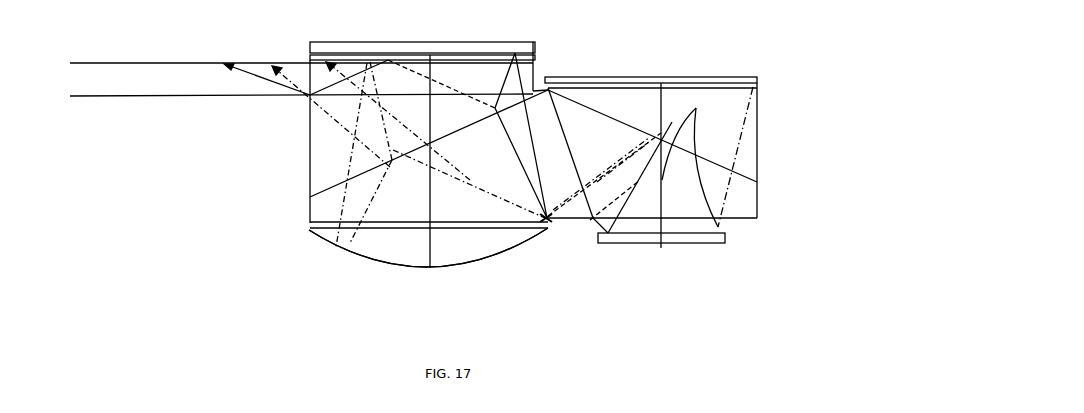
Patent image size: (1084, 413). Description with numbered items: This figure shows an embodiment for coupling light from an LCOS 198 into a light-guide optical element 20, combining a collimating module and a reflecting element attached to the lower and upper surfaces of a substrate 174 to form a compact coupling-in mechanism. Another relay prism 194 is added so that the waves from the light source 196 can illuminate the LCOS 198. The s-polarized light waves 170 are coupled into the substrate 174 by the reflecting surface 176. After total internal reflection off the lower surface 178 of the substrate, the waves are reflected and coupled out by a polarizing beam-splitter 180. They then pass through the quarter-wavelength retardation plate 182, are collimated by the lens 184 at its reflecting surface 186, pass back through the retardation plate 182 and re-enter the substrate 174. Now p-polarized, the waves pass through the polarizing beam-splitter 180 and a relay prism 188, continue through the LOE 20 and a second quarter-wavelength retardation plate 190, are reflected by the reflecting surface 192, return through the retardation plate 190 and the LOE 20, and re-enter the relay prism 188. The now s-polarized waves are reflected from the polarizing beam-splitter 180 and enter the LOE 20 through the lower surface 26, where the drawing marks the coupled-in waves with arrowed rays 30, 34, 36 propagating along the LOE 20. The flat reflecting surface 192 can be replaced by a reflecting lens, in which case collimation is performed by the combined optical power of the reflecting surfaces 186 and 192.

The light-guide optical element 20 is at (101, 83).
The lower surface 26 is at (167, 97).
The light ray 30 is at (324, 55).
The light ray 34 is at (214, 62).
The light ray 36 is at (277, 63).
The s-polarized light waves 170 is at (697, 109).
The substrate 174 is at (757, 187).
The reflecting surface 176 is at (619, 120).
The lower surface 178 is at (568, 228).
The polarizing beam-splitter 180 is at (543, 87).
The quarter-wavelength retardation plate 182 is at (310, 228).
The lens 184 is at (494, 236).
The reflecting surface 186 is at (397, 268).
The relay prism 188 is at (330, 145).
The second quarter-wavelength retardation plate 190 is at (545, 78).
The reflecting surface 192 is at (447, 44).
The relay prism 194 is at (746, 122).
The light source 196 is at (758, 80).
The LCOS 198 is at (659, 246).